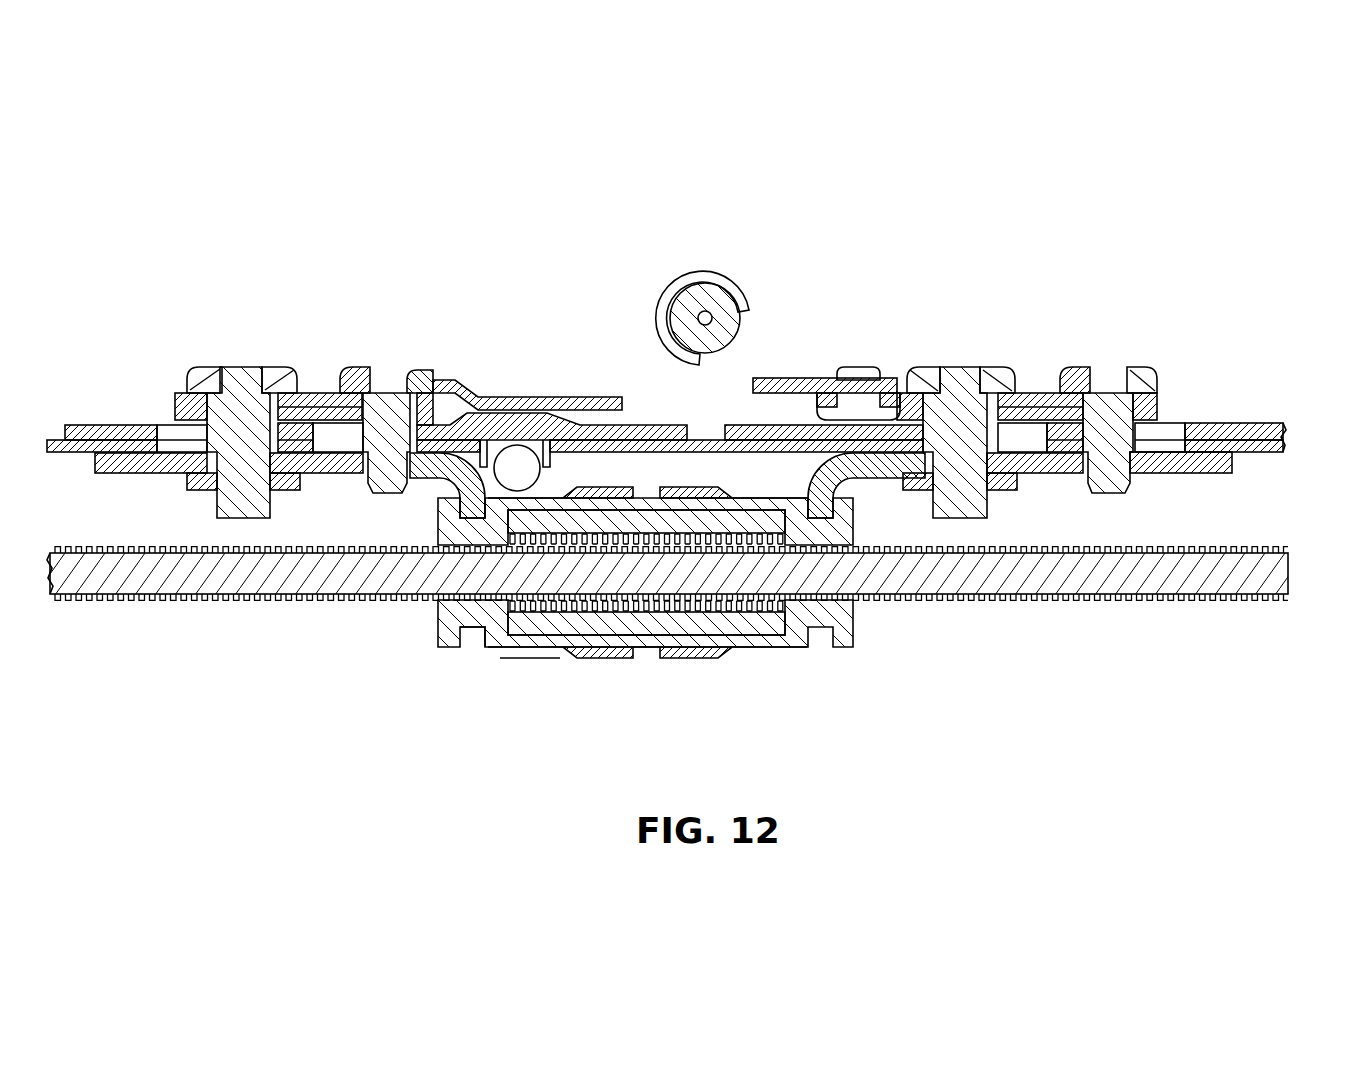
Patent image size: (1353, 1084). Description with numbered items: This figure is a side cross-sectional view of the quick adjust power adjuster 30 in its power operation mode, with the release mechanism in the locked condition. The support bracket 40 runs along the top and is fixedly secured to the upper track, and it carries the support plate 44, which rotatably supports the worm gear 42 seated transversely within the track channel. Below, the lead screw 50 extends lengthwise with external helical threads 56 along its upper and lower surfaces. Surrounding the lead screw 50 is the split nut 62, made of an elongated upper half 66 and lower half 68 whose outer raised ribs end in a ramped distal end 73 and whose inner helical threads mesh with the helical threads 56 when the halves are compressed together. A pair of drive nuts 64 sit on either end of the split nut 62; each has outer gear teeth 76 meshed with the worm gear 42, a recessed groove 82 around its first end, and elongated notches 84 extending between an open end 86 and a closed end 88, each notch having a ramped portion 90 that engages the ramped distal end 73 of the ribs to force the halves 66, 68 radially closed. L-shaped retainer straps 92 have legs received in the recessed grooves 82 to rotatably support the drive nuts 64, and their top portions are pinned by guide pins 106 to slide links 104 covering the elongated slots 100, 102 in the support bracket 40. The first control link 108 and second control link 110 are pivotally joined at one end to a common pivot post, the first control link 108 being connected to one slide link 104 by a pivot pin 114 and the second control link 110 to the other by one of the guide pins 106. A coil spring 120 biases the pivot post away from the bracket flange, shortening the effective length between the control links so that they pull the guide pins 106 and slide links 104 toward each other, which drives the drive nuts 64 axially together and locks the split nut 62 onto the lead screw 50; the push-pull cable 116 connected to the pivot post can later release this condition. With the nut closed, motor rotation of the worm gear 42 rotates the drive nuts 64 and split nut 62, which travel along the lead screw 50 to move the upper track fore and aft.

The quick adjust power adjuster 30 is at (1130, 220).
The support bracket 40 is at (1253, 427).
The worm gear 42 is at (530, 462).
The support plate 44 is at (512, 438).
The lead screw 50 is at (1290, 578).
The helical threads 56 is at (1205, 603).
The split nut 62 is at (690, 630).
The drive nuts 64 is at (710, 659).
The upper half 66 is at (640, 513).
The lower half 68 is at (577, 646).
The ramped distal end 73 is at (520, 626).
The gear teeth 76 is at (543, 647).
The recessed groove 82 is at (470, 646).
The notches 84 is at (633, 637).
The open end 86 is at (637, 638).
The closed end 88 is at (493, 634).
The ramped portion 90 is at (600, 625).
The retainer straps 92 is at (118, 470).
The elongated slot 100 is at (1185, 432).
The elongated slot 102 is at (170, 432).
The slide links 104 is at (280, 394).
The guide pins 106 is at (205, 370).
The first control link 108 is at (788, 381).
The second control link 110 is at (460, 388).
The pivot pin 114 is at (862, 378).
The push-pull cable 116 is at (718, 298).
The coil spring 120 is at (703, 273).